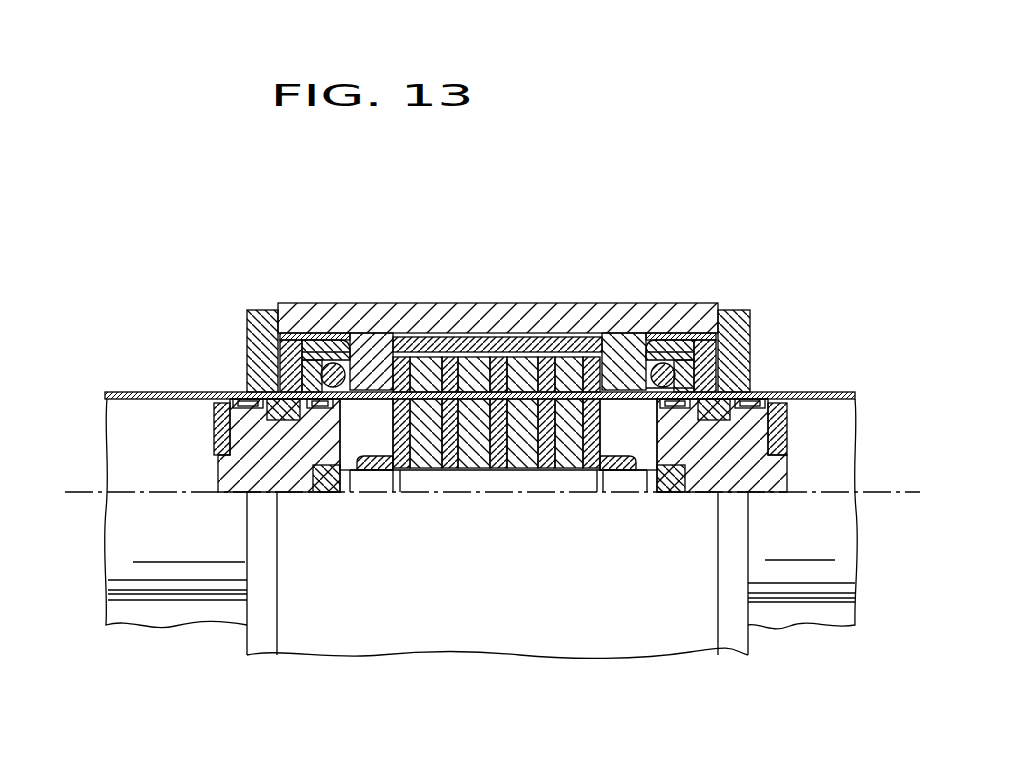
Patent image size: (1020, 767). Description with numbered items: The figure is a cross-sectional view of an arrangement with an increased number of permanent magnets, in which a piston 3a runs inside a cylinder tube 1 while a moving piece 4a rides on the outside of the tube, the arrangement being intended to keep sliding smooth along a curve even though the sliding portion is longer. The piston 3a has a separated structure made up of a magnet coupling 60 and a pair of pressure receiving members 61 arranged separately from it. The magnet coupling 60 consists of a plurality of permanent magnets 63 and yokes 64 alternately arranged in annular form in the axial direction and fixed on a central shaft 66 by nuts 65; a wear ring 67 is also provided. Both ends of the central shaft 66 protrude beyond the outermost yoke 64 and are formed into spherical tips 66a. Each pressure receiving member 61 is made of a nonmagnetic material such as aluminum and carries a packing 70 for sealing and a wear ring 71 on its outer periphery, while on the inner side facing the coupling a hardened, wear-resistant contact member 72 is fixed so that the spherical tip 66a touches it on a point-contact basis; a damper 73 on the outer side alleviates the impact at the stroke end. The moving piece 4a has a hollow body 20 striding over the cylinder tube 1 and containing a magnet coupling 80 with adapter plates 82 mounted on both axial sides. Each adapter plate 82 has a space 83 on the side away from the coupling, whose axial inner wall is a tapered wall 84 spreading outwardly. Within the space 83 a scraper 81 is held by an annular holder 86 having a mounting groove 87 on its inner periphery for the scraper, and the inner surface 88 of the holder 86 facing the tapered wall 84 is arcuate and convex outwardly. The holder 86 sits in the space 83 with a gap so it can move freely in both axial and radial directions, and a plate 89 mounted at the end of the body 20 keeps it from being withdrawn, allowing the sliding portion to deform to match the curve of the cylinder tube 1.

The cylinder tube 1 is at (855, 391).
The piston 3a is at (836, 441).
The moving piece 4a is at (498, 272).
The body 20 is at (457, 313).
The magnet coupling 60 is at (508, 510).
The pressure receiving member 61 is at (230, 462).
The permanent magnet 63 is at (528, 472).
The yoke 64 is at (452, 472).
The nut 65 is at (377, 457).
The central shaft 66 is at (578, 472).
The tip 66a is at (348, 472).
The wear ring 67 is at (473, 472).
The packing 70 is at (270, 402).
The wear ring 71 is at (248, 400).
The contact member 72 is at (322, 494).
The damper 73 is at (213, 418).
The magnet coupling 80 is at (490, 349).
The scraper 81 is at (312, 380).
The adapter plate 82 is at (390, 355).
The space 83 is at (322, 375).
The tapered wall 84 is at (322, 362).
The holder 86 is at (290, 345).
The mounting groove 87 is at (728, 392).
The inner surface 88 is at (346, 352).
The plate 89 is at (248, 325).